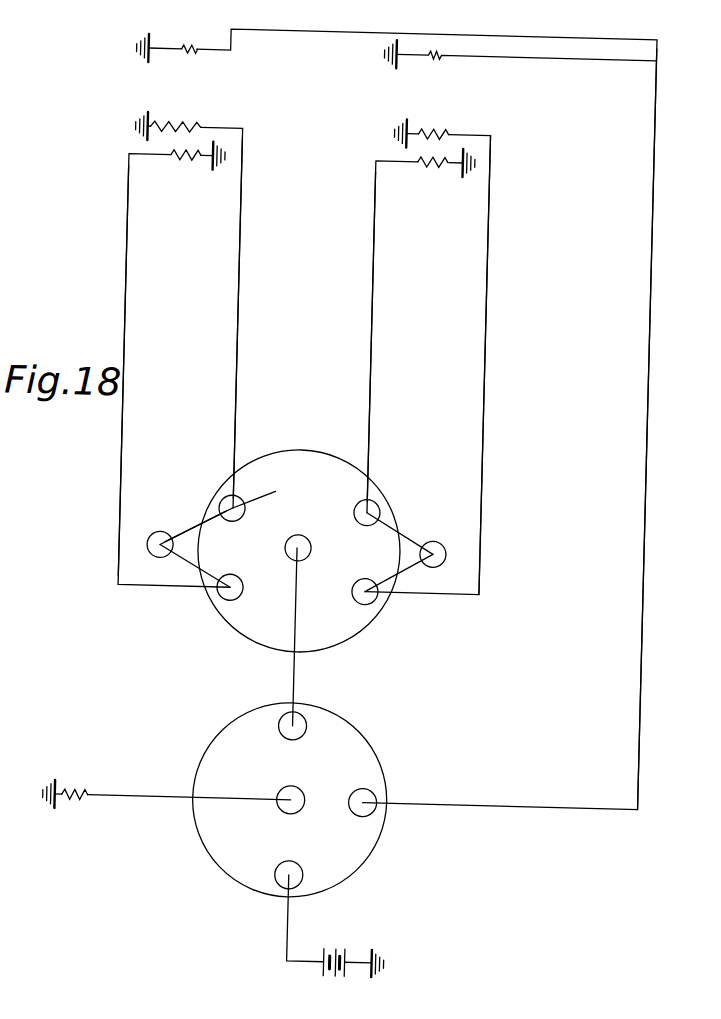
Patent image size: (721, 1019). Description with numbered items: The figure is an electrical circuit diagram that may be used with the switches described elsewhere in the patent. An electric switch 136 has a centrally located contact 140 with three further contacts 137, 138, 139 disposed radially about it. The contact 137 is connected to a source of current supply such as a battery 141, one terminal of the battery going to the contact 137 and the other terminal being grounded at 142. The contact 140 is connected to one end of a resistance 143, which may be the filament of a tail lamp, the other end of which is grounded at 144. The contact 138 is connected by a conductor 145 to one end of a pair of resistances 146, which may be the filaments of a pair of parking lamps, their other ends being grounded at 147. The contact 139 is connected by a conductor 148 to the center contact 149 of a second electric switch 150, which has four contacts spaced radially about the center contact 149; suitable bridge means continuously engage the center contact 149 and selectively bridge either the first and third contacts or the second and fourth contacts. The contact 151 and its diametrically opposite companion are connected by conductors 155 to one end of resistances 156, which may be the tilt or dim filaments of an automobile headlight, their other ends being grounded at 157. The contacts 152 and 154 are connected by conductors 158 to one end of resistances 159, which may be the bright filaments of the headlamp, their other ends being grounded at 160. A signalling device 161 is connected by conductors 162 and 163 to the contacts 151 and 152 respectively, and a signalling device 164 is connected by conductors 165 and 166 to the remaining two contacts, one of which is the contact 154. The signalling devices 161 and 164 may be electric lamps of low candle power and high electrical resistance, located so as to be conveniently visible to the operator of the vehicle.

The electric switch 136 is at (384, 759).
The contact 137 is at (306, 871).
The contact 138 is at (359, 810).
The contact 139 is at (307, 736).
The contact 140 is at (307, 792).
The battery 141 is at (344, 949).
The ground 142 is at (389, 950).
The resistance 143 is at (84, 799).
The ground 144 is at (52, 786).
The conductor 145 is at (644, 668).
The resistances 146 is at (176, 50).
The ground 147 is at (126, 41).
The conductor 148 is at (297, 676).
The center contact 149 is at (301, 540).
The electric switch 150 is at (300, 450).
The contact 151 is at (353, 590).
The contact 152 is at (359, 523).
The contact 154 is at (236, 577).
The conductors 155 is at (232, 360).
The resistances 156 is at (170, 128).
The ground 157 is at (121, 131).
The conductors 158 is at (119, 449).
The resistances 159 is at (172, 162).
The ground 160 is at (213, 172).
The signalling device 161 is at (440, 548).
The conductor 162 is at (405, 567).
The conductor 163 is at (431, 510).
The signalling device 164 is at (160, 535).
The conductor 165 is at (186, 533).
The conductor 166 is at (188, 566).